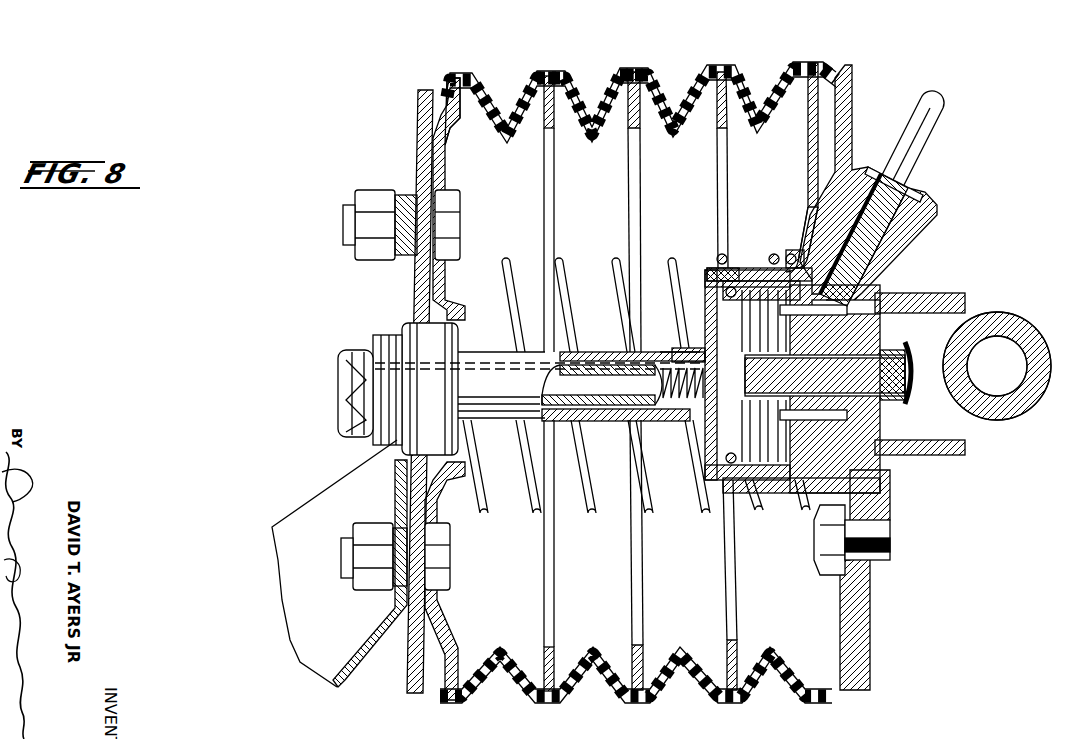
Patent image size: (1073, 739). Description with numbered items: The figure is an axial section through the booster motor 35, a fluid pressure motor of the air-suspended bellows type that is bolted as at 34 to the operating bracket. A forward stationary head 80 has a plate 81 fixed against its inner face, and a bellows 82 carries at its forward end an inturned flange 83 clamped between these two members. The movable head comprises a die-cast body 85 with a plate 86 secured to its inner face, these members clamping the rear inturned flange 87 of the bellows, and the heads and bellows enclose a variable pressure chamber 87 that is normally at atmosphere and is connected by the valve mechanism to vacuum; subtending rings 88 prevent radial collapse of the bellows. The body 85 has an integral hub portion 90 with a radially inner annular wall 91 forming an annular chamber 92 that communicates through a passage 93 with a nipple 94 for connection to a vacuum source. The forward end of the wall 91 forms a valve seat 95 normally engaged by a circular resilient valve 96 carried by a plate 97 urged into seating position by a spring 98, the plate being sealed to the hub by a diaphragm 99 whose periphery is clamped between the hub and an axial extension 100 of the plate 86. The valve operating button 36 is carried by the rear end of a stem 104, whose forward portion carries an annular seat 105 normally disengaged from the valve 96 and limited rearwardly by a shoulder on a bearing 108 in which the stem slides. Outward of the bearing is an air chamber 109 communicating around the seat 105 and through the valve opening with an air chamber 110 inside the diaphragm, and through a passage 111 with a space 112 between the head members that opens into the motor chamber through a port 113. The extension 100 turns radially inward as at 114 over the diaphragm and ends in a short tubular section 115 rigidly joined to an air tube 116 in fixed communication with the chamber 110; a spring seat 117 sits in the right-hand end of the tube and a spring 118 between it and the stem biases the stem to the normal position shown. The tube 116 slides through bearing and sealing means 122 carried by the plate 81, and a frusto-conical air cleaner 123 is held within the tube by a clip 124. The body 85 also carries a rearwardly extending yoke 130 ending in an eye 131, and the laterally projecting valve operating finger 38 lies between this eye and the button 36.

The bolt 34 is at (369, 200).
The booster motor 35 is at (666, 70).
The button 36 is at (894, 362).
The laterally projecting end 38 is at (914, 374).
The forward stationary head 80 is at (422, 150).
The plate 81 is at (446, 180).
The bellows 82 is at (535, 78).
The inturned flange 83 is at (455, 78).
The die-cast body 85 is at (856, 138).
The plate 86 is at (807, 149).
The inturned flange / variable pressure chamber 87 is at (615, 76).
The subtending rings 88 is at (555, 198).
The hub portion 90 is at (764, 262).
The annular wall 91 is at (845, 307).
The annular chamber 92 is at (840, 302).
The passage 93 is at (858, 230).
The nipple 94 is at (921, 145).
The valve seat 95 is at (787, 258).
The valve 96 is at (769, 259).
The plate 97 is at (726, 292).
The spring 98 is at (714, 278).
The diaphragm 99 is at (722, 341).
The axial extension 100 is at (720, 256).
The stem 104 is at (844, 393).
The annular seat 105 is at (786, 458).
The bearing 108 is at (826, 338).
The air chamber 109 is at (828, 416).
The air chamber 110 is at (710, 442).
The passage 111 is at (853, 461).
The space 112 is at (850, 485).
The port 113 is at (812, 222).
The radially inward portion 114 is at (708, 300).
The tubular section 115 is at (684, 347).
The air tube 116 is at (608, 350).
The spring seat 117 is at (650, 420).
The spring 118 is at (708, 410).
The bearing and sealing means 122 is at (452, 338).
The air cleaner 123 is at (602, 390).
The clip 124 is at (338, 394).
The yoke 130 is at (960, 293).
The eye 131 is at (1033, 322).